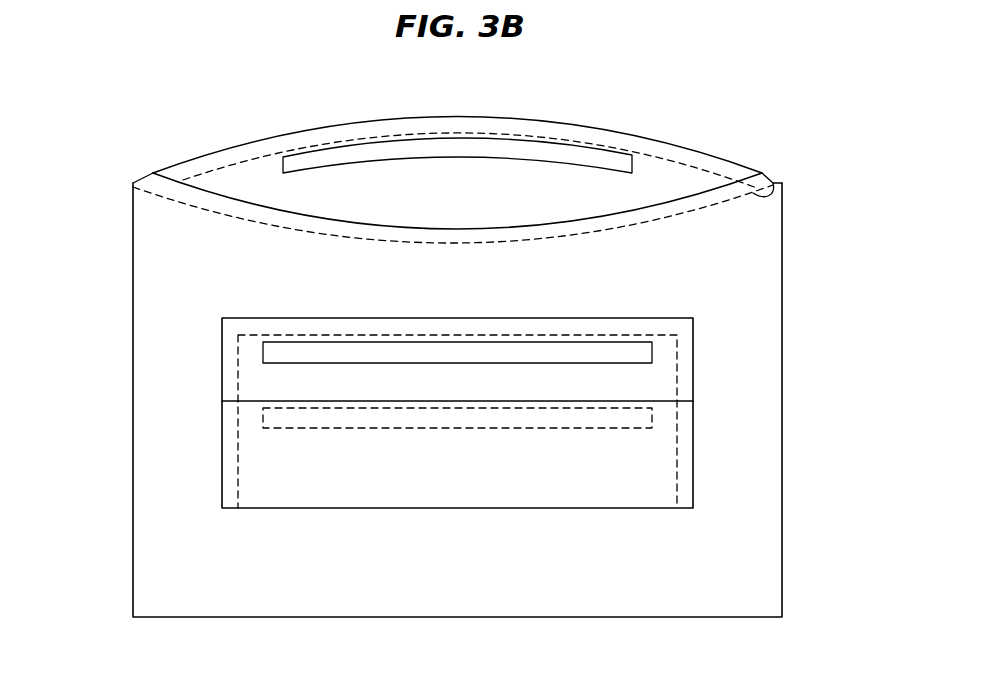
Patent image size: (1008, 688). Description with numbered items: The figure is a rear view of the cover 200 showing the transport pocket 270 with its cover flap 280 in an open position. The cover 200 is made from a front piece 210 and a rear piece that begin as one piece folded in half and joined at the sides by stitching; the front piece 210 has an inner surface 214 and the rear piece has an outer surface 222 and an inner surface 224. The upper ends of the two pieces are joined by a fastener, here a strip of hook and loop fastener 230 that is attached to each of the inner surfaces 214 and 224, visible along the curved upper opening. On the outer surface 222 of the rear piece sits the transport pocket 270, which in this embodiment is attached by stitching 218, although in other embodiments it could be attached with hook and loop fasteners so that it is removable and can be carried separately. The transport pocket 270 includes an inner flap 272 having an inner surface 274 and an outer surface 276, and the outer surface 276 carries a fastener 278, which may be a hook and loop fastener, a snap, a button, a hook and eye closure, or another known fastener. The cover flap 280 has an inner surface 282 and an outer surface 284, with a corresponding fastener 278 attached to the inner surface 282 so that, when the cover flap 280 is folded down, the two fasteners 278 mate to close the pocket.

The cover 200 is at (136, 102).
The front piece 210 is at (654, 191).
The inner surface 214 is at (216, 181).
The stitching 218 is at (782, 192).
The outer surface 222 is at (727, 307).
The inner surface 224 is at (580, 217).
The hook and loop fastener 230 is at (447, 150).
The transport pocket 270 is at (214, 306).
The inner flap 272 is at (655, 470).
The inner surface 274 is at (222, 467).
The outer surface 276 is at (637, 497).
The fastener 278 is at (272, 357).
The cover flap 280 is at (677, 383).
The inner surface 282 is at (260, 380).
The outer surface 284 is at (693, 355).